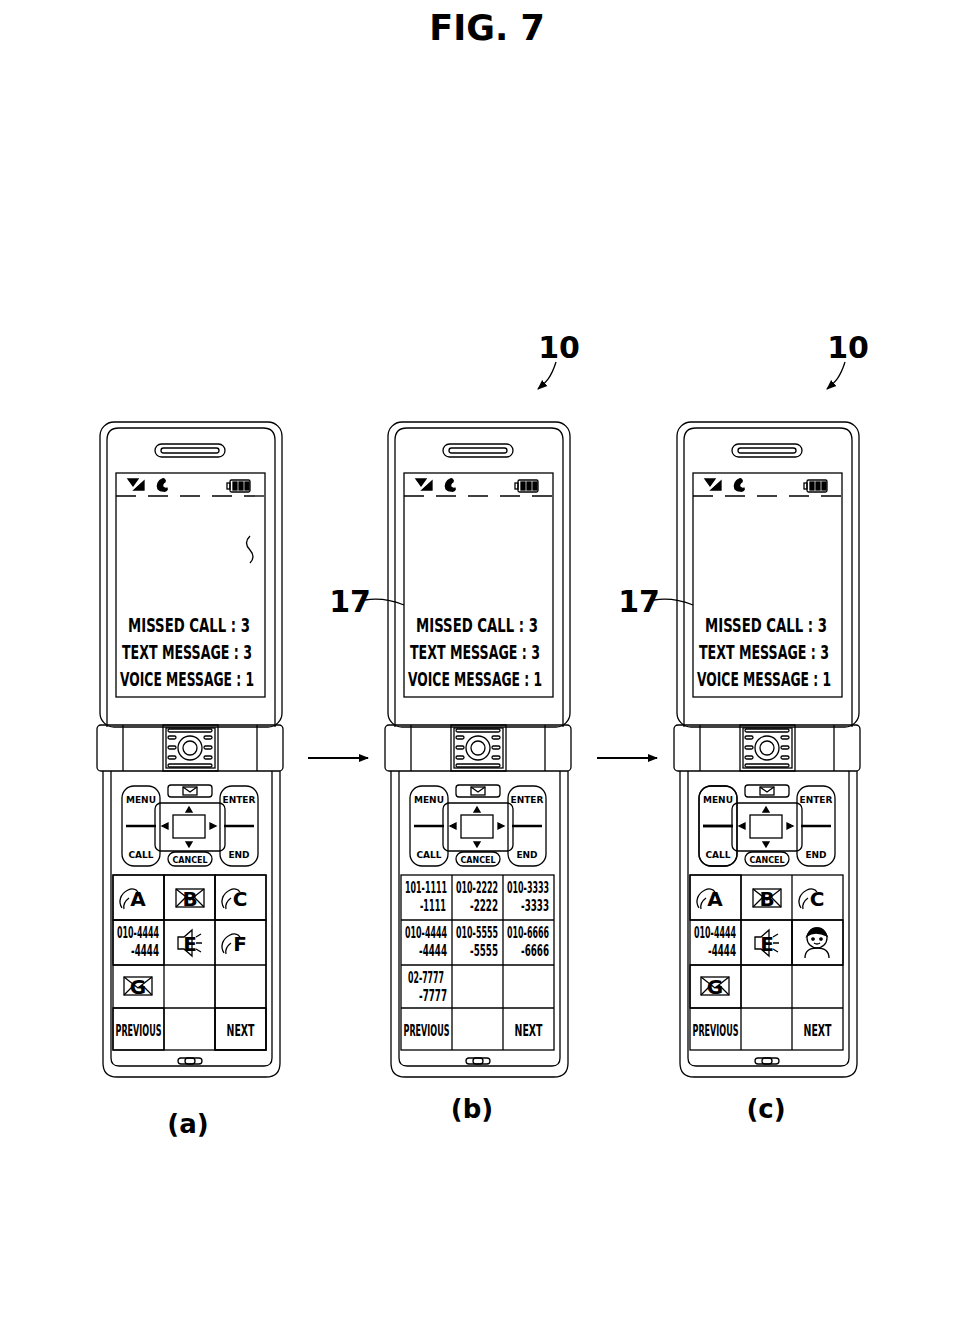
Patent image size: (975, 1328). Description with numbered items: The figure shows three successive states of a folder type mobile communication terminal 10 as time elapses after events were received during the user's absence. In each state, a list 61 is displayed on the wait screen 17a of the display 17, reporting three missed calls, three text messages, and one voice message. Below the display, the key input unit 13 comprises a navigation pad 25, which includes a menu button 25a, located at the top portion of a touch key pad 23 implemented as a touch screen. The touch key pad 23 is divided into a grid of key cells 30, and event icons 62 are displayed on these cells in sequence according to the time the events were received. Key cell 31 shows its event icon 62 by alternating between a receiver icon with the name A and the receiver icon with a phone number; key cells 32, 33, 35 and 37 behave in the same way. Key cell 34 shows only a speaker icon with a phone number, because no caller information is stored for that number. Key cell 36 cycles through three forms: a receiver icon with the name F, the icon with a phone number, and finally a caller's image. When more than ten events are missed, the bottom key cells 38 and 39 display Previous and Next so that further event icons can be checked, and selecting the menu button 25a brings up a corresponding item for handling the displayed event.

The mobile communication terminal 10 is at (250, 389).
The key input unit 13 is at (173, 950).
The display 17 is at (116, 605).
The wait screen 17a is at (262, 548).
The touch key pad 23 is at (195, 976).
The navigation pad 25 is at (126, 850).
The menu button 25a is at (676, 819).
The key cells 30 is at (266, 938).
The key cell (no. 1) 31 is at (113, 898).
The key cell (no. 2) 32 is at (216, 876).
The key cell (no. 3) 33 is at (266, 893).
The key cell (no. 4) 34 is at (113, 940).
The key cell (no. 5) 35 is at (822, 958).
The key cell (no. 6) 36 is at (848, 942).
The key cell (no. 7) 37 is at (680, 992).
The "Previous" key cell 38 is at (137, 1052).
The "Next" key cell 39 is at (243, 1052).
The list 61 is at (251, 623).
The event icon 62 is at (685, 896).